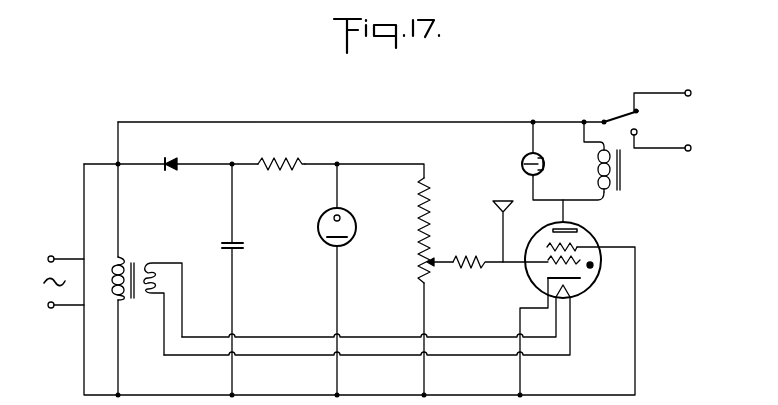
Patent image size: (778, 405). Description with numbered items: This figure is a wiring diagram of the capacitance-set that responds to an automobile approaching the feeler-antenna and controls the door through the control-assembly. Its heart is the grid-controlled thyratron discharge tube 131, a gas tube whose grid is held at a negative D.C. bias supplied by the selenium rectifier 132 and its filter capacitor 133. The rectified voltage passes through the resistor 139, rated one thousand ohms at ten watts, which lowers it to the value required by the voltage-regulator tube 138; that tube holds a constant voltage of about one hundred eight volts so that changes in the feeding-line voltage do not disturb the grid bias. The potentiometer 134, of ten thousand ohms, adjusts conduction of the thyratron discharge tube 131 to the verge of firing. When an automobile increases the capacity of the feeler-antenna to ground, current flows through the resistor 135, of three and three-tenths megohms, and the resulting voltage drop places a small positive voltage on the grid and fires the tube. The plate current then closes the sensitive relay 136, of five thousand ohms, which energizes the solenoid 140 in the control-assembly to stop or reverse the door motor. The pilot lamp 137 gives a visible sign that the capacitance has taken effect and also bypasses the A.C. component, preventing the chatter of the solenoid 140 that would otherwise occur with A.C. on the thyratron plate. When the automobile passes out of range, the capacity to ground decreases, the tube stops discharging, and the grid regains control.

The thyratron discharge tube 131 is at (590, 233).
The selenium rectifier 132 is at (172, 152).
The filter capacitor 133 is at (237, 241).
The potentiometer 134 is at (420, 256).
The resistor 135 is at (474, 268).
The relay 136 is at (140, 268).
The pilot lamp 137 is at (522, 157).
The voltage-regulator tube 138 is at (349, 216).
The resistor 139 is at (283, 151).
The solenoid 140 is at (622, 170).